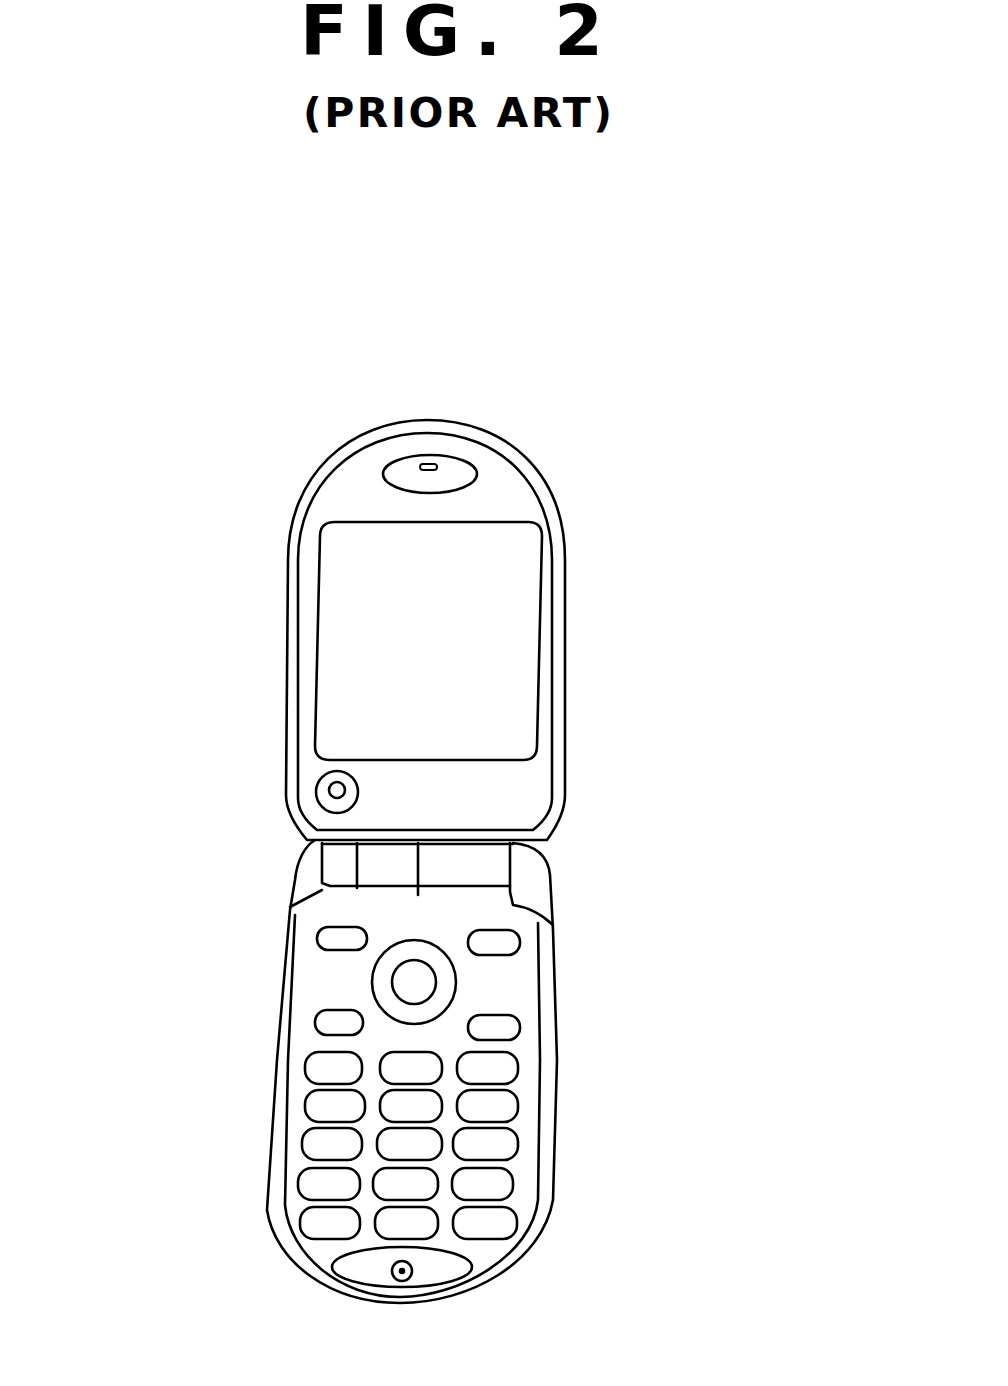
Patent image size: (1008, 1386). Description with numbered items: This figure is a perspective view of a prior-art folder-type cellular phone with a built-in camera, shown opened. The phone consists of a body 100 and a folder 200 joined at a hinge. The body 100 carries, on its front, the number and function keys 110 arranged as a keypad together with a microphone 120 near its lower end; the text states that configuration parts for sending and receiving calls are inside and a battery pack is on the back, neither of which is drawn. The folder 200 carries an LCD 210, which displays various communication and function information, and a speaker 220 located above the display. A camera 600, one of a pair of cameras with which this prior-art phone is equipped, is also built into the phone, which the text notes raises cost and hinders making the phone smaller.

The body 100 is at (595, 1128).
The number and function keys 110 is at (316, 1100).
The microphone 120 is at (404, 1272).
The folder 200 is at (593, 665).
The LCD 210 is at (503, 537).
The speaker 220 is at (435, 463).
The camera 600 is at (330, 797).